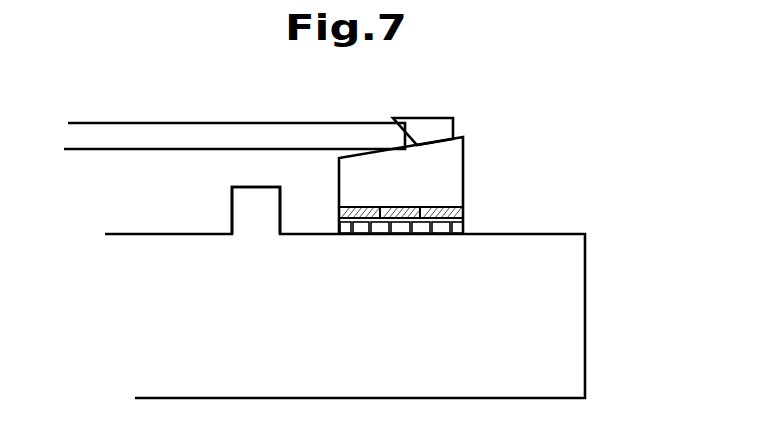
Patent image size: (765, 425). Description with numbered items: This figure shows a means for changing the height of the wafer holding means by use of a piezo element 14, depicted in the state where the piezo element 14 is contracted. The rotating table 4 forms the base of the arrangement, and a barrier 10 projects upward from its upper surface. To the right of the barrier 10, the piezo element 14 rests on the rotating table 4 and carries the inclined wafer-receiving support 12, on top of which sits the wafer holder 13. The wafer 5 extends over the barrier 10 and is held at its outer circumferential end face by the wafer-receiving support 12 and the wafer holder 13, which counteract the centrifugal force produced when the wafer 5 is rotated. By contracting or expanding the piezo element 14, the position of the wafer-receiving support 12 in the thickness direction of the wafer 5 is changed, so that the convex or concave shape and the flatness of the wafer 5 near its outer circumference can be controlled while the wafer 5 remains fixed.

The rotating table 4 is at (585, 282).
The wafer 5 is at (210, 122).
The barrier 10 is at (232, 214).
The wafer-receiving support 12 is at (465, 145).
The wafer holder 13 is at (455, 119).
The piezo element 14 is at (465, 223).